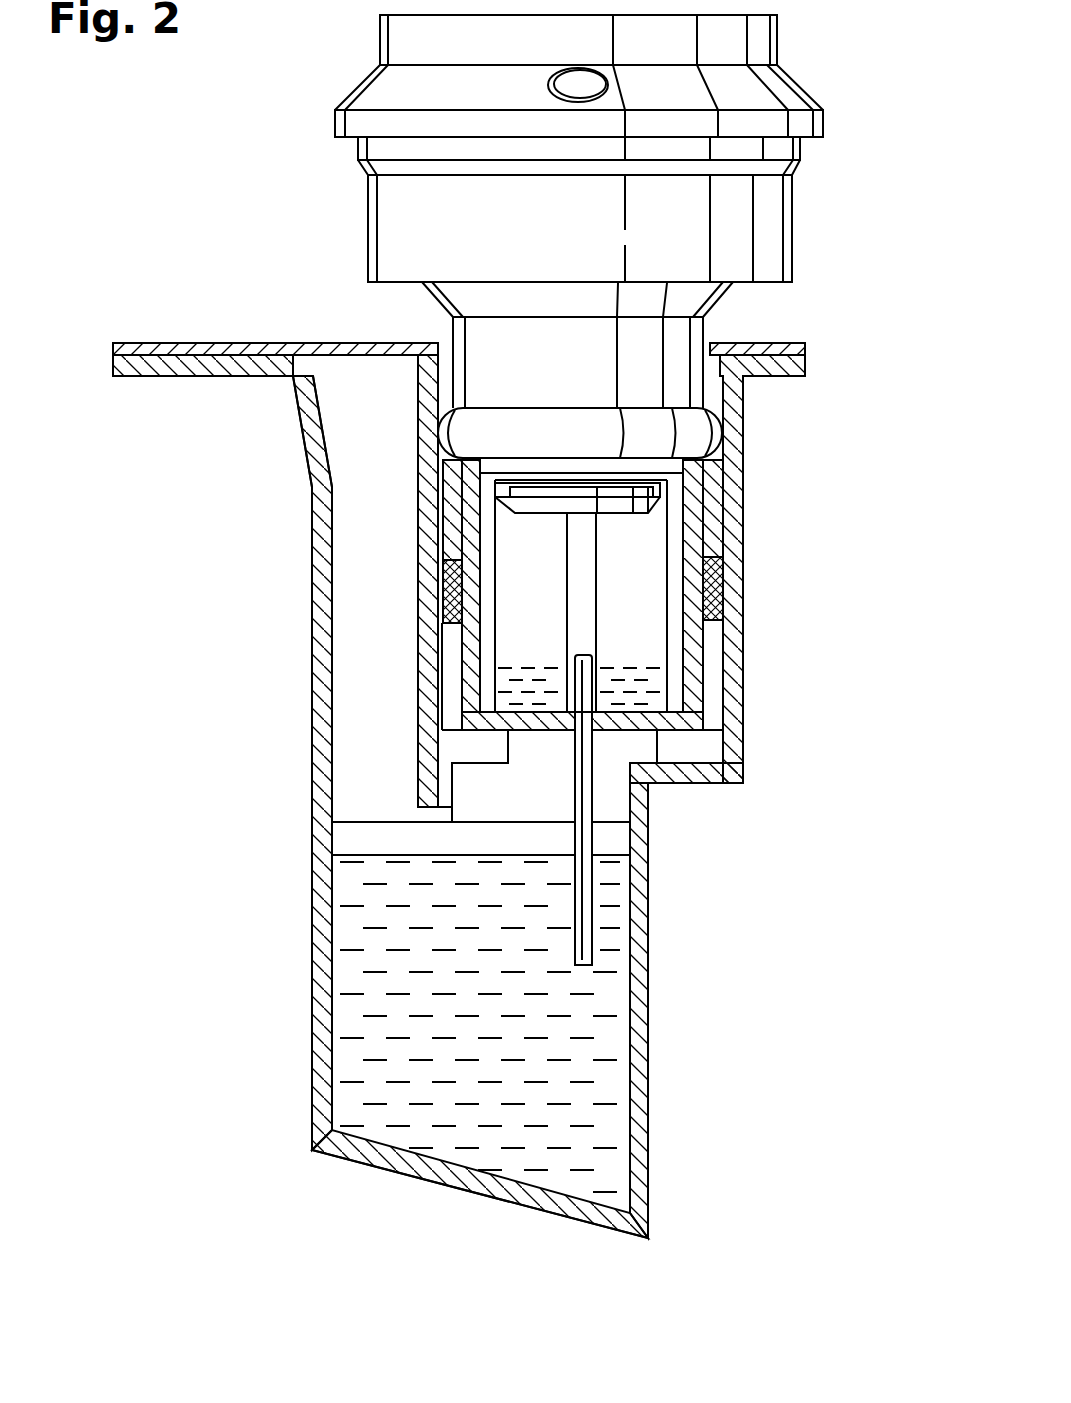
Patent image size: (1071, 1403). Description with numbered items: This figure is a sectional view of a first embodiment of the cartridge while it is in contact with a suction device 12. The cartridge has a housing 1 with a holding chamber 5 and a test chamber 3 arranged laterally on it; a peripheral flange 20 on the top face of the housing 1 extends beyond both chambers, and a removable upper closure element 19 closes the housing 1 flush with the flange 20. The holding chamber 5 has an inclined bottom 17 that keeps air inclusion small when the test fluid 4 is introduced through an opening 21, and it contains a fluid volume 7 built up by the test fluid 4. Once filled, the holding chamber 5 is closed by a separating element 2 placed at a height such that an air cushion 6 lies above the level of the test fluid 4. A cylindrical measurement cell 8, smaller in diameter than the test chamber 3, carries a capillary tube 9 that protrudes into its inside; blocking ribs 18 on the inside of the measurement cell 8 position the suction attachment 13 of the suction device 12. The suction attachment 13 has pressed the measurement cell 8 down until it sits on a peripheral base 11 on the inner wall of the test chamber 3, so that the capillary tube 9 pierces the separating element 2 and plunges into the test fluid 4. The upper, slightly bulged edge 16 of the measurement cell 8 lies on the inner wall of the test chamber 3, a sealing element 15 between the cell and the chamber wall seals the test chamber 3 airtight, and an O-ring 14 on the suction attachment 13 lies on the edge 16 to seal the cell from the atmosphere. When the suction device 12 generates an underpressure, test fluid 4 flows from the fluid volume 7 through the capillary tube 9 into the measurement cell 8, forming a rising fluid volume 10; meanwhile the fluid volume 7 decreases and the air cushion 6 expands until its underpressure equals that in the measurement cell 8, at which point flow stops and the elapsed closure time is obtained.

The housing 1 is at (300, 754).
The separating element 2 is at (380, 822).
The test chamber 3 is at (728, 637).
The test fluid 4 is at (590, 1062).
The holding chamber 5 is at (312, 722).
The air cushion 6 is at (423, 842).
The fluid volume 7 is at (362, 1042).
The measurement cell 8 is at (693, 547).
The capillary tube 9 is at (583, 930).
The fluid volume 10 is at (505, 688).
The peripheral base 11 is at (493, 745).
The suction device 12 is at (780, 89).
The suction attachment 13 is at (617, 513).
The O-ring 14 is at (700, 433).
The sealing element 15 is at (717, 587).
The edge 16 is at (453, 474).
The inclined bottom 17 is at (475, 1180).
The blocking ribs 18 is at (488, 598).
The upper closure element 19 is at (300, 343).
The peripheral flange 20 is at (165, 372).
The opening 21 is at (360, 382).